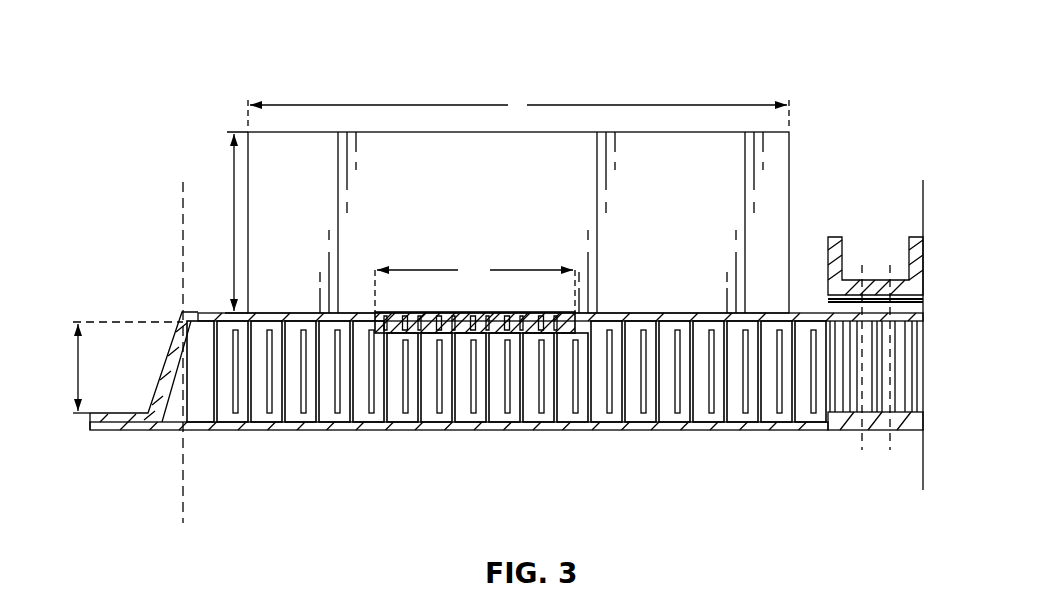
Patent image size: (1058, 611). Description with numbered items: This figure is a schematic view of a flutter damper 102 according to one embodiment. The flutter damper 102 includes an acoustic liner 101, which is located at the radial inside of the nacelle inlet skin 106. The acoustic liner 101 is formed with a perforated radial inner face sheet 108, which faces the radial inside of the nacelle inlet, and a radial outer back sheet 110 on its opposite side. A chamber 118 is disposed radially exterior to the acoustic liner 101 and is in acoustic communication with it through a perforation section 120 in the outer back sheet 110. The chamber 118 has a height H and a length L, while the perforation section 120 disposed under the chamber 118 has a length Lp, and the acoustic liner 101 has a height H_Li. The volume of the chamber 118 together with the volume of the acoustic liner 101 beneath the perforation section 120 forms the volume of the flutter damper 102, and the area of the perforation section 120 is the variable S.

The acoustic liner 101 is at (312, 408).
The flutter damper 102 is at (755, 55).
The nacelle inlet skin 106 is at (162, 432).
The perforated radial inner face sheet 108 is at (690, 432).
The radial outer back sheet 110 is at (792, 314).
The chamber 118 is at (789, 157).
The perforation section 120 is at (415, 333).